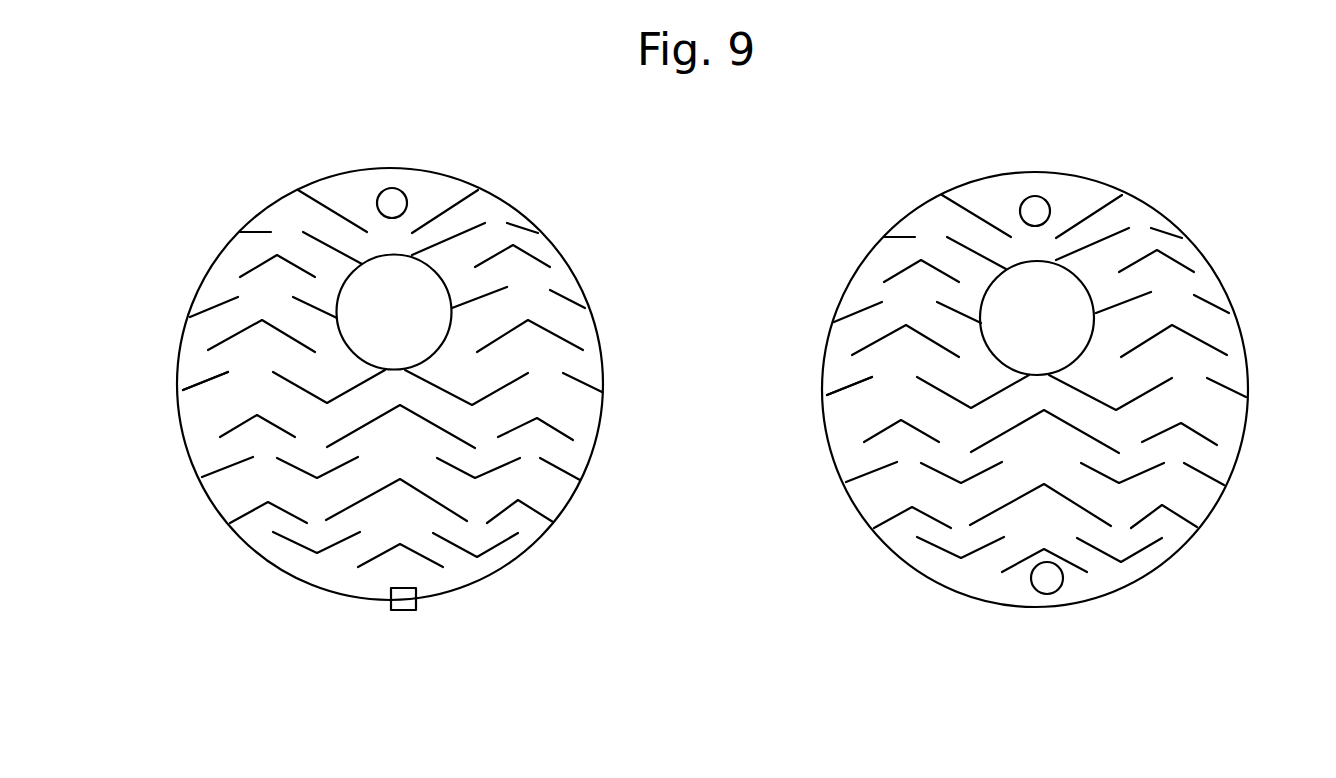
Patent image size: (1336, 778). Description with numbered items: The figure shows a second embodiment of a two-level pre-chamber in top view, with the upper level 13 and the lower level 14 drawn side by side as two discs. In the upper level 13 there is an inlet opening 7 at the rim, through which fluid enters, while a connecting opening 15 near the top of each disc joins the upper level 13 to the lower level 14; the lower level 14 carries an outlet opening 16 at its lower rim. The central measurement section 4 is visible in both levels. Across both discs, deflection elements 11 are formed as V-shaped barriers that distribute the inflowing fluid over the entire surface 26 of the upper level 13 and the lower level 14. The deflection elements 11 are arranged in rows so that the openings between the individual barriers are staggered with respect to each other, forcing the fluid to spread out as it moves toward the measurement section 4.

The measurement section 4 is at (368, 312).
The inlet opening 7 is at (402, 612).
The deflection elements 11 is at (297, 467).
The upper level 13 is at (495, 592).
The lower level 14 is at (880, 568).
The connecting opening 15 is at (385, 192).
The outlet opening 16 is at (1045, 601).
The surface 26 is at (220, 404).